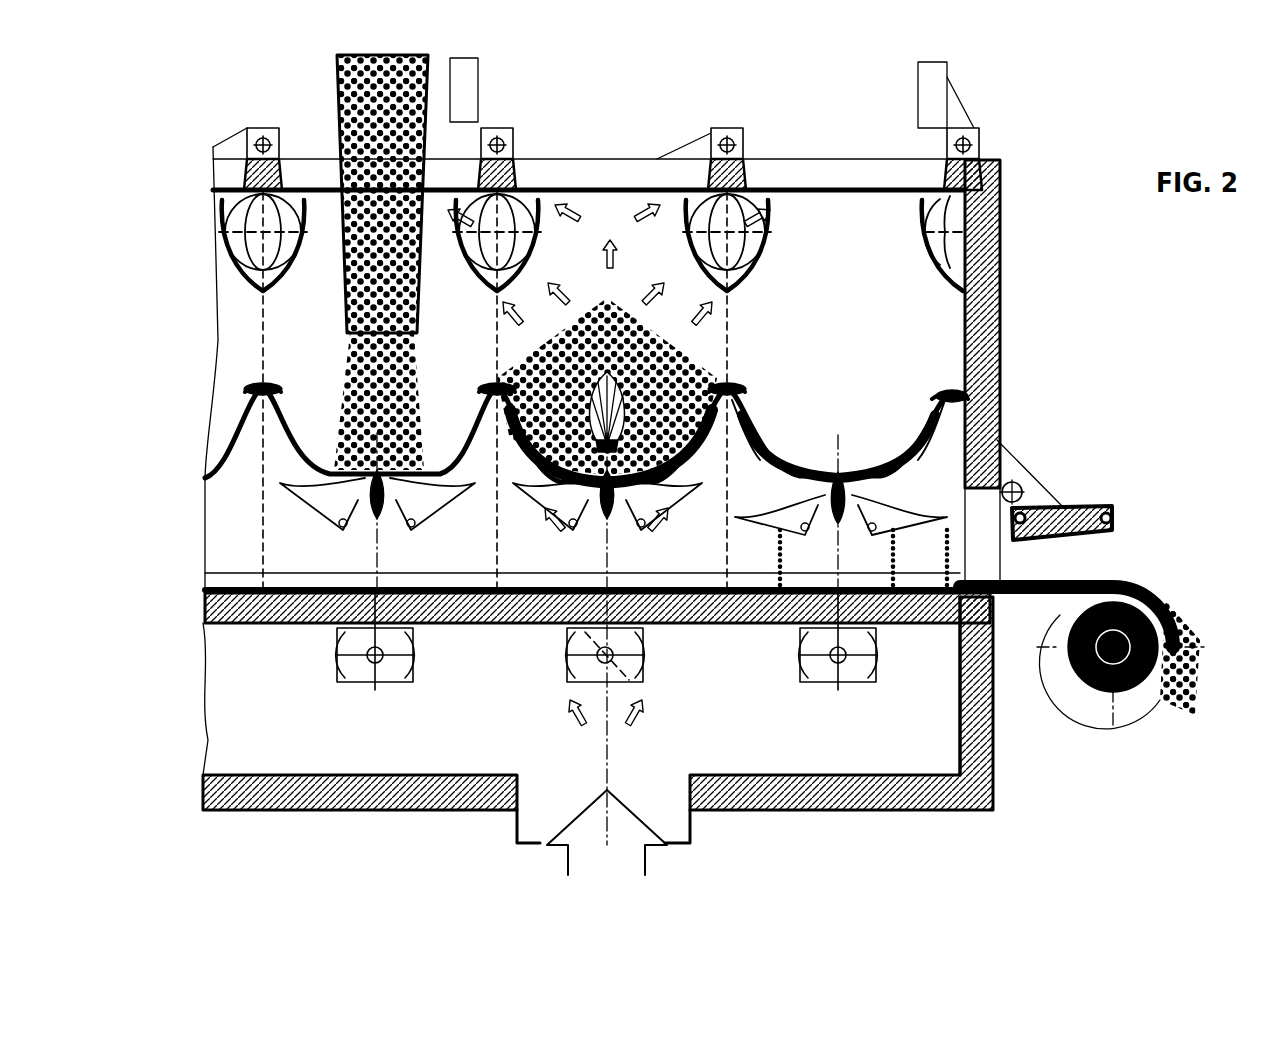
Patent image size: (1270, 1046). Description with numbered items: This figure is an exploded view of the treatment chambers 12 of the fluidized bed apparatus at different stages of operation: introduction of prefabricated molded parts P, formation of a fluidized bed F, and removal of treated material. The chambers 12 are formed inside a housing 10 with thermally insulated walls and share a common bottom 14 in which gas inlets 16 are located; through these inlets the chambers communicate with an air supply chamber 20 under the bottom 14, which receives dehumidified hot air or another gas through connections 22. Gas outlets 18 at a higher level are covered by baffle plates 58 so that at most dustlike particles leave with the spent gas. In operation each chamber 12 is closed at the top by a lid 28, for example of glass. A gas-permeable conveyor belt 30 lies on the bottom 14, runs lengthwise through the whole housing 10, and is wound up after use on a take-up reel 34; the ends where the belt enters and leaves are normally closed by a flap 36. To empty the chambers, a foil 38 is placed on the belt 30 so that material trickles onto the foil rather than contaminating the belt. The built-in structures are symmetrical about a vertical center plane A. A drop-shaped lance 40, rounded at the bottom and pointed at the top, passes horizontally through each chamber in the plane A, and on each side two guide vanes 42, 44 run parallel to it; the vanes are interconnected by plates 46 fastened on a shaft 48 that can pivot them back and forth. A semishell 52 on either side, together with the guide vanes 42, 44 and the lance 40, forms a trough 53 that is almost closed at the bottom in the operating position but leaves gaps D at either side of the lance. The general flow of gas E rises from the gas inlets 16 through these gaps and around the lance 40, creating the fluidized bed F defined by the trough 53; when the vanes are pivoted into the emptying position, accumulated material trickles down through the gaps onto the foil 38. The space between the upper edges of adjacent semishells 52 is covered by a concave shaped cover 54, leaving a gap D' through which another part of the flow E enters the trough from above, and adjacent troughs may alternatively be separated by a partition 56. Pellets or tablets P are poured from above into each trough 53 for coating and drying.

The housing 10 is at (1003, 239).
The treatment chamber 12 is at (836, 295).
The bottom 14 is at (475, 624).
The gas inlet 16 is at (358, 670).
The gas outlet 18 is at (250, 238).
The air supply chamber 20 is at (442, 748).
The connection 22 is at (530, 823).
The lid 28 is at (503, 128).
The conveyor belt 30 is at (218, 603).
The take-up reel 34 is at (1092, 694).
The flap 36 is at (1065, 506).
The foil 38 is at (213, 577).
The lance 40 is at (372, 515).
The guide vane 42 is at (417, 527).
The guide vane 44 is at (456, 498).
The plate 46 is at (296, 498).
The shaft 48 is at (577, 530).
The semishell 52 is at (745, 427).
The trough 53 is at (435, 452).
The shaped cover 54 is at (282, 387).
The partition 56 is at (496, 325).
The baffle plate 58 is at (240, 268).
The center plane A is at (838, 460).
The gap D is at (553, 438).
The gap D' is at (567, 392).
The general flow of gas E is at (603, 257).
The fluidized bed F is at (655, 367).
The prefabricated molded part P is at (358, 353).